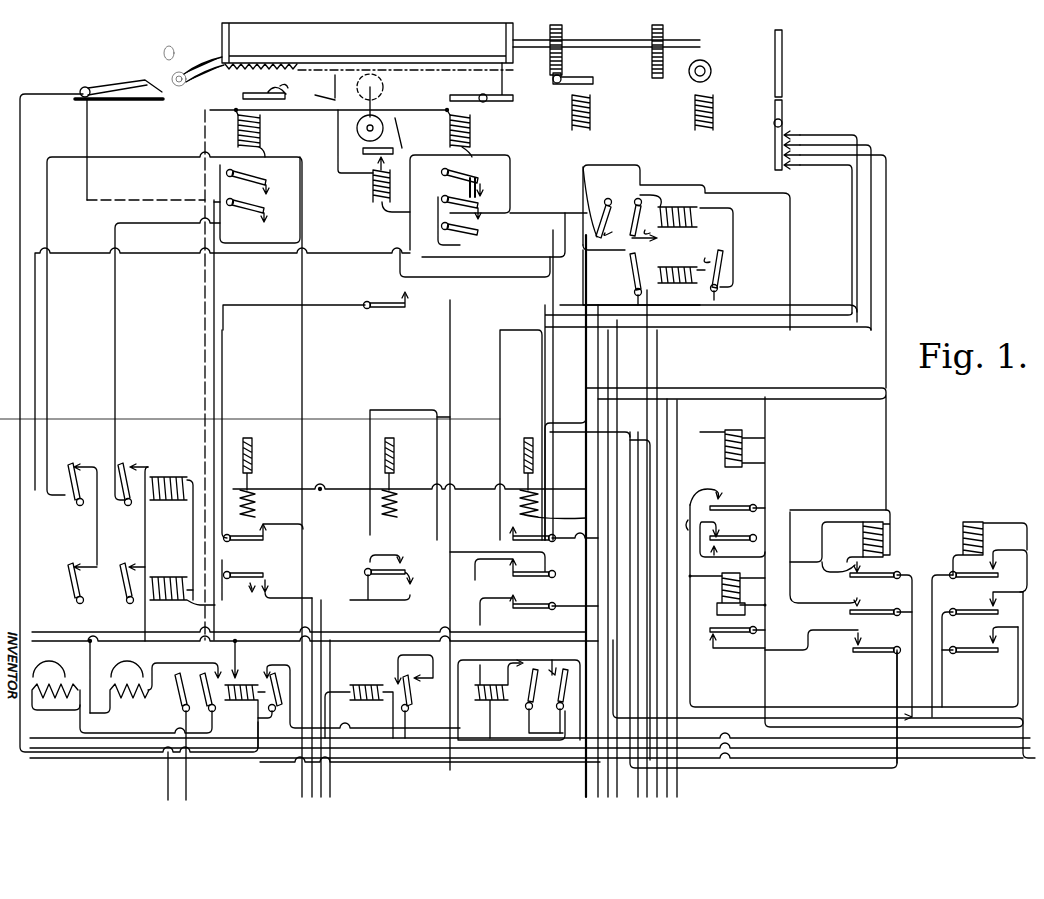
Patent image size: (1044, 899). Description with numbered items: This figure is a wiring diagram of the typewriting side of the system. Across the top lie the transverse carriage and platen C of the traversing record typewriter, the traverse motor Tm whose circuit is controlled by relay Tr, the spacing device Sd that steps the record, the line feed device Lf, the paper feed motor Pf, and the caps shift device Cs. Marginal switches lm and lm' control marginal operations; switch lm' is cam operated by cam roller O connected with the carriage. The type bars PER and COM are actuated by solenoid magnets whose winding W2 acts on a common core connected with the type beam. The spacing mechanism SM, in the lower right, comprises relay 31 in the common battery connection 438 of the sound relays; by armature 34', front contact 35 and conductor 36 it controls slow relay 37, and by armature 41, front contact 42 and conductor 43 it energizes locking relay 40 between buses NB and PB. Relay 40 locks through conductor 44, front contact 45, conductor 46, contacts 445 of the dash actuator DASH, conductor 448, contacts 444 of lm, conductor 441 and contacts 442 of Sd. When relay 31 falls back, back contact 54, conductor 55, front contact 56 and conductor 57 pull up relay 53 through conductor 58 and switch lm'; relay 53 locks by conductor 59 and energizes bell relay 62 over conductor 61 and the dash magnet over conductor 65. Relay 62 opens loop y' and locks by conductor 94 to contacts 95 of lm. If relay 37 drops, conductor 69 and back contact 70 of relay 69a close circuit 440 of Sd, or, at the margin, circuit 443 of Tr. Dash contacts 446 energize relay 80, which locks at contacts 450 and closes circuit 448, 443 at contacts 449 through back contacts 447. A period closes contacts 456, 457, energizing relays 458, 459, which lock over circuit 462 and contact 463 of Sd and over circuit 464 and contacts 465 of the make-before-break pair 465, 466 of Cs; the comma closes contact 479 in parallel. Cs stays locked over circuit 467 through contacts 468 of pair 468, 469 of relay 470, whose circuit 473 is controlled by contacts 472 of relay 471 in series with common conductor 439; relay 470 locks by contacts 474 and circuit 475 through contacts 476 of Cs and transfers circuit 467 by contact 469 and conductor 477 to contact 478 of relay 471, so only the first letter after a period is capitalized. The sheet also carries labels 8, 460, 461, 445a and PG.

The conductor 58 is at (1030, 775).
The marginal limit switch lm' is at (103, 65).
The cam roller O is at (193, 58).
The traverse motor Tm is at (393, 114).
The spacing device Sd is at (262, 133).
The caps shift device Cs is at (472, 133).
The line feed device Lf is at (594, 112).
The paper feed motor Pf is at (719, 112).
The traverse relay Tr is at (374, 172).
The marginal limit switch lm is at (796, 100).
The normally closed contacts 444 is at (810, 140).
The contacts 95 is at (795, 160).
The normally closed contacts 442 is at (262, 199).
The locking circuit conductor 441 is at (312, 540).
The contact 463 is at (248, 210).
The locking circuit 462 is at (117, 300).
The negative bus NB is at (766, 490).
The positive bus PB is at (212, 345).
The line 8 is at (250, 419).
The contacts 465 is at (478, 175).
The locking contacts 466 is at (480, 200).
The locking circuit 467 is at (484, 221).
The locking circuit 475 is at (516, 258).
The contacts 476 is at (448, 250).
The locking contacts 474 is at (679, 236).
The conductor 477 is at (620, 167).
The make contact 469 is at (642, 198).
The relay 470 is at (680, 205).
The break contact 468 is at (661, 238).
The actuating circuit 473 is at (735, 218).
The contacts 472 is at (722, 262).
The relay 471 is at (710, 297).
The contact 478 is at (630, 292).
The conductor 94 is at (730, 330).
The common battery conductor 439 is at (660, 370).
The locking circuit 464 is at (88, 512).
The contact 461 is at (120, 565).
The contact 460 is at (122, 465).
The relay 458 is at (165, 475).
The relay 459 is at (170, 577).
The period type bar PER is at (244, 467).
The transverse carriage and platen C is at (260, 470).
The winding W2 is at (256, 490).
The comma type bar COM is at (403, 475).
The circuit 440 is at (463, 416).
The circuit 443 is at (451, 343).
The dash actuator DASH is at (545, 468).
The contact 445a is at (247, 537).
The contact 457 is at (245, 575).
The contact 456 is at (282, 574).
The contact 479 is at (381, 572).
The normally closed contacts 445 is at (510, 540).
The front contacts 446 is at (503, 576).
The back contacts 447 is at (539, 613).
The common battery connection 438 is at (652, 458).
The relay 31 is at (748, 440).
The front contact 35 is at (700, 483).
The armature 34' is at (737, 487).
The conductor 36 is at (840, 602).
The front contact 42 is at (732, 535).
The armature 41 is at (757, 537).
The back contact 54 is at (712, 549).
The slow relay 37 is at (720, 594).
The conductor 55 is at (790, 588).
The conductor 43 is at (765, 608).
The front contact 45 is at (869, 641).
The conductor 44 is at (826, 547).
The locking relay 40 is at (886, 532).
The spacing mechanism SM is at (854, 498).
The front contact 56 is at (860, 597).
The second locking relay 53 is at (963, 540).
The conductor 57 is at (932, 594).
The conductor 59 is at (1023, 676).
The conductor 46 is at (720, 707).
The conductor 61 is at (926, 760).
The conductor 65 is at (798, 738).
The conductor 69 is at (853, 760).
The bell relay 62 is at (246, 704).
The loop y' is at (182, 755).
The conductors PG is at (430, 773).
The relay 69a is at (359, 712).
The back contact 70 is at (409, 693).
The conductor 448 is at (458, 712).
The relay 80 is at (498, 699).
The locking contacts 450 is at (530, 678).
The front contacts 449 is at (558, 690).